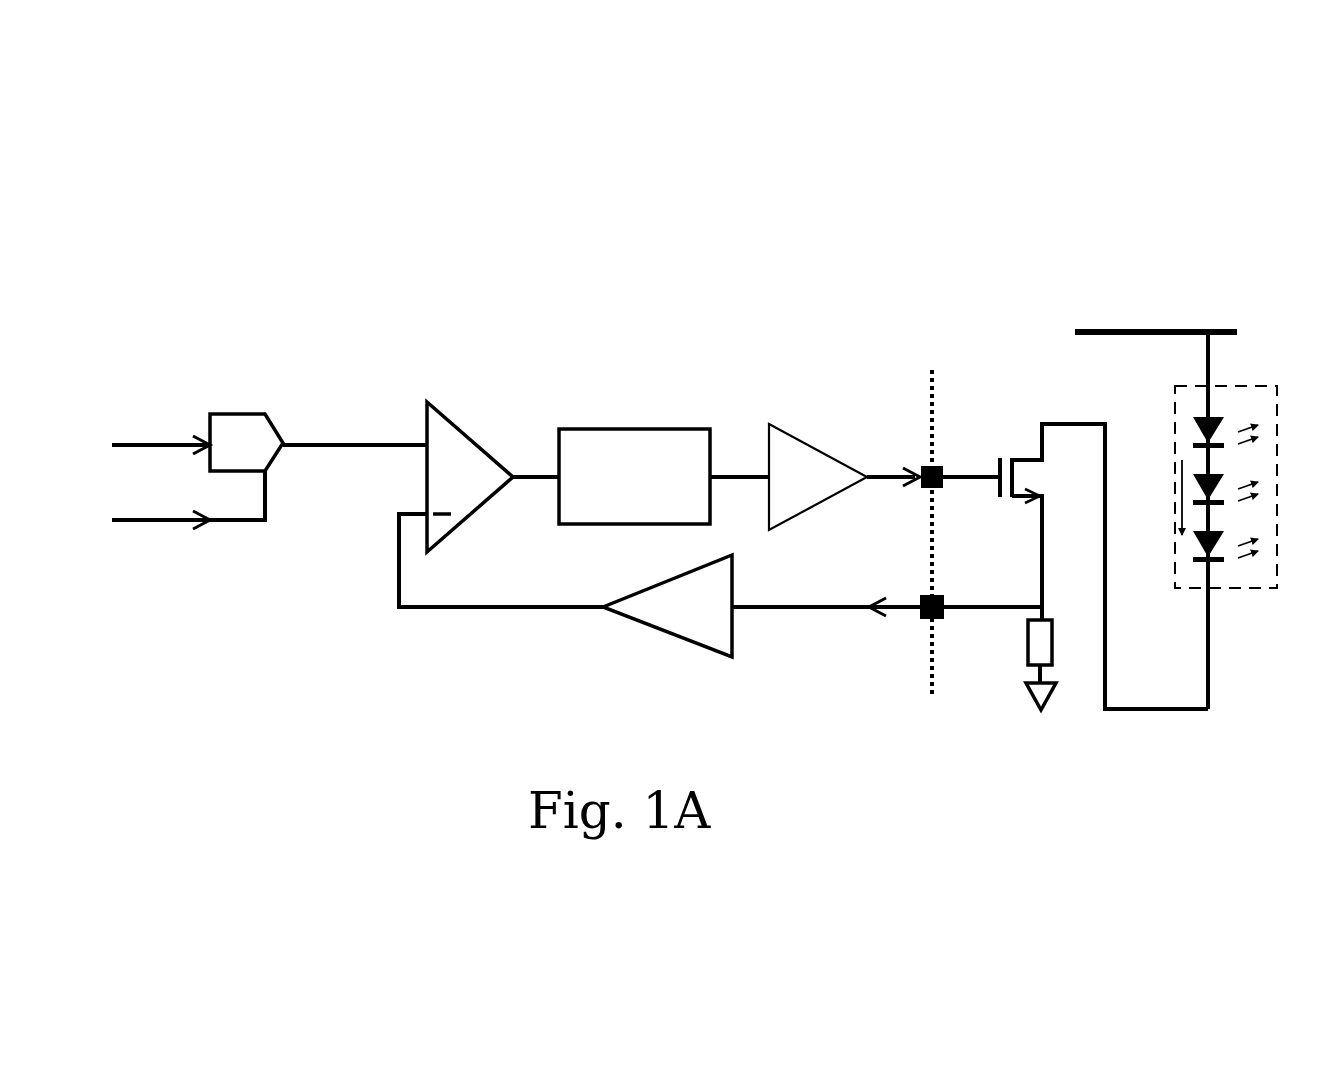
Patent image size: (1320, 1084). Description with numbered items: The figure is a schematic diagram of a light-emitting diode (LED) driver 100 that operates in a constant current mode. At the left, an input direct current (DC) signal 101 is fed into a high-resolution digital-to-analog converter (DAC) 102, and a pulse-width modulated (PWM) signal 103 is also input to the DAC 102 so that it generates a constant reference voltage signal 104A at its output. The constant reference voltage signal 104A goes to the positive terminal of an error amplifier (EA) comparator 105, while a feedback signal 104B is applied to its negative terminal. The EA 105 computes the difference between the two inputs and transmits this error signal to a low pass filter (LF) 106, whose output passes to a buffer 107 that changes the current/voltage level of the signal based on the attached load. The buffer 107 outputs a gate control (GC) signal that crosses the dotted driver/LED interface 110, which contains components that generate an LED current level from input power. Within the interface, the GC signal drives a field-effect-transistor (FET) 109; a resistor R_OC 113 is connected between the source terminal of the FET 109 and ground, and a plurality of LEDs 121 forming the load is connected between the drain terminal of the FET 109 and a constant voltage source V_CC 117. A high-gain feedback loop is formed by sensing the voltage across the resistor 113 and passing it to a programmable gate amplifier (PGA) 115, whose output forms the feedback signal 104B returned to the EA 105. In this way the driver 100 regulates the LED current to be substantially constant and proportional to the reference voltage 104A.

The light-emitting diode (LED) driver 100 is at (973, 260).
The input direct current (DC) signal 101 is at (172, 440).
The high-resolution digital-to-analog converter (DAC) 102 is at (268, 413).
The pulse-width modulated (PWM) signal 103 is at (237, 524).
The constant reference voltage signal 104A is at (378, 443).
The feedback signal 104B is at (465, 608).
The error amplifier (EA) comparator 105 is at (440, 410).
The low pass filter (LF) 106 is at (575, 525).
The buffer 107 is at (782, 423).
The field-effect-transistor (FET) 109 is at (1003, 495).
The driver/LED interface 110 is at (936, 385).
The resistor (R_OC) 113 is at (1052, 640).
The programmable gate amplifier (PGA) 115 is at (677, 640).
The constant voltage source (V_CC) 117 is at (1130, 330).
The plurality of LEDs 121 is at (1265, 385).